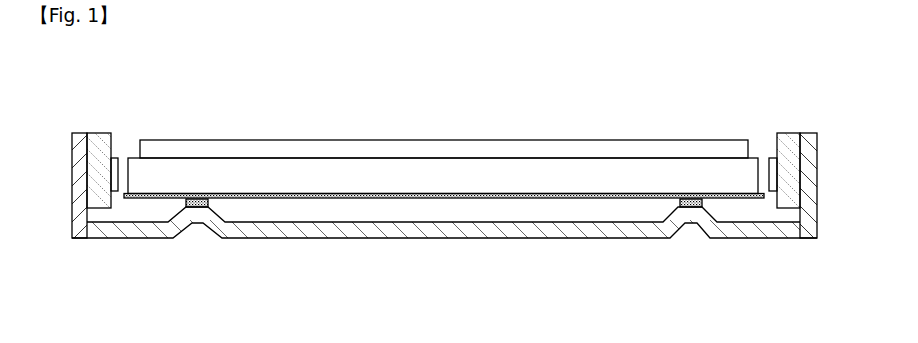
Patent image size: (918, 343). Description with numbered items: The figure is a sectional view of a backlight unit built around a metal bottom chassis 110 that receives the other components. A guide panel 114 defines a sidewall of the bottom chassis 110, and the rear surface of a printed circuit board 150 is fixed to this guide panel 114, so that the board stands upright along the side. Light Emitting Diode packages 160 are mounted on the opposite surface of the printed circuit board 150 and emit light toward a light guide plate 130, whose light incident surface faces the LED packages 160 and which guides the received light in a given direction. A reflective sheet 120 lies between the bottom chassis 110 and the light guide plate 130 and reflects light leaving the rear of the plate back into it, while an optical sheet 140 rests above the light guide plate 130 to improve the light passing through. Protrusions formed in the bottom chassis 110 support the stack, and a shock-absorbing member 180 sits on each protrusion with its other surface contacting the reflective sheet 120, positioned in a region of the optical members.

The bottom chassis 110 is at (123, 235).
The guide panel 114 is at (72, 170).
The reflective sheet 120 is at (300, 198).
The light guide plate 130 is at (200, 167).
The optical sheet 140 is at (270, 147).
The printed circuit board 150 is at (97, 138).
The Light Emitting Diode packages 160 is at (113, 160).
The shock-absorbing member 180 is at (208, 203).